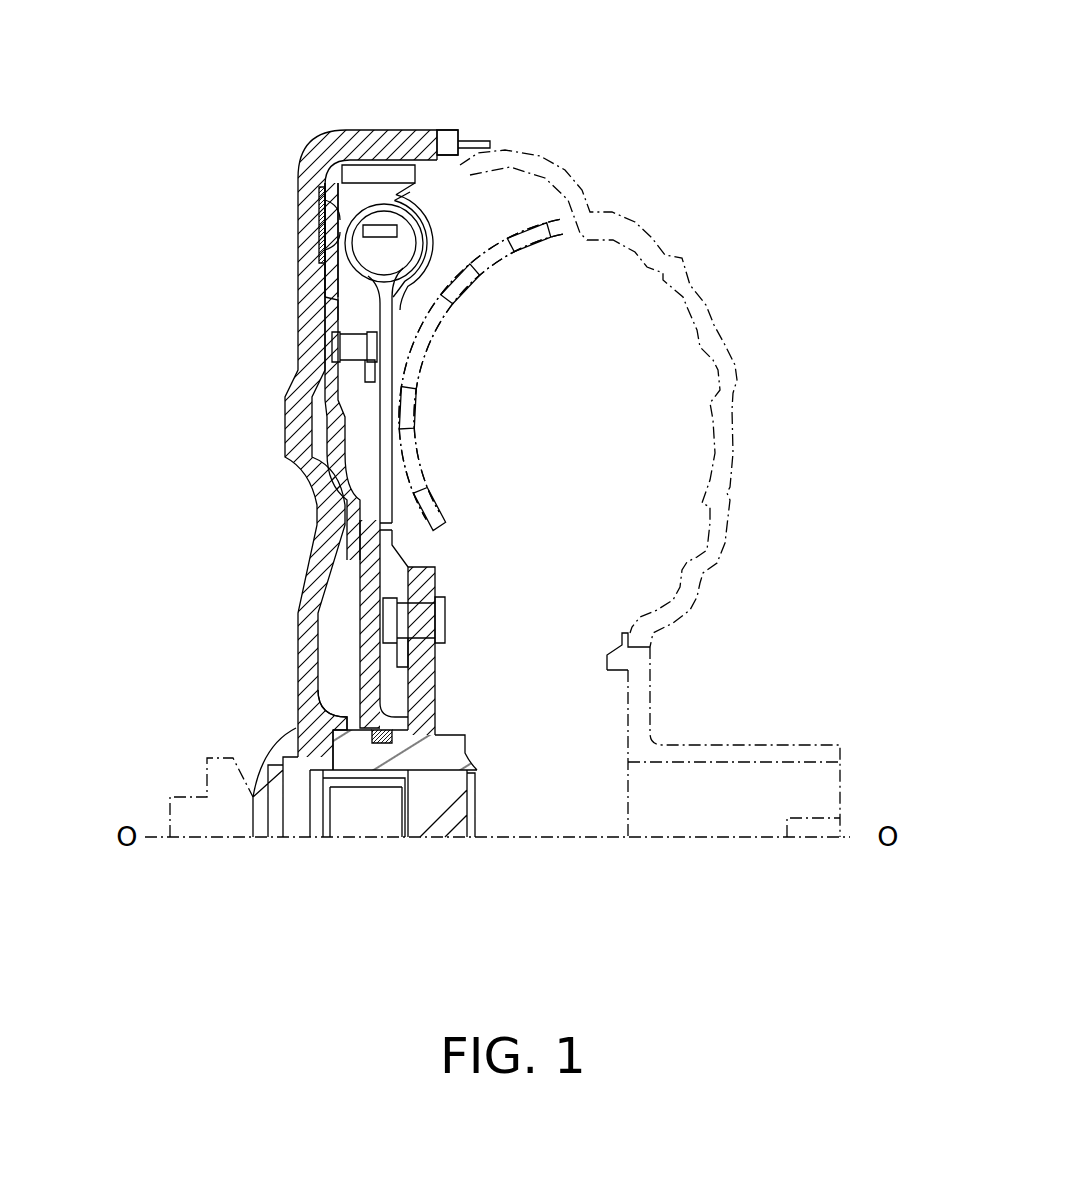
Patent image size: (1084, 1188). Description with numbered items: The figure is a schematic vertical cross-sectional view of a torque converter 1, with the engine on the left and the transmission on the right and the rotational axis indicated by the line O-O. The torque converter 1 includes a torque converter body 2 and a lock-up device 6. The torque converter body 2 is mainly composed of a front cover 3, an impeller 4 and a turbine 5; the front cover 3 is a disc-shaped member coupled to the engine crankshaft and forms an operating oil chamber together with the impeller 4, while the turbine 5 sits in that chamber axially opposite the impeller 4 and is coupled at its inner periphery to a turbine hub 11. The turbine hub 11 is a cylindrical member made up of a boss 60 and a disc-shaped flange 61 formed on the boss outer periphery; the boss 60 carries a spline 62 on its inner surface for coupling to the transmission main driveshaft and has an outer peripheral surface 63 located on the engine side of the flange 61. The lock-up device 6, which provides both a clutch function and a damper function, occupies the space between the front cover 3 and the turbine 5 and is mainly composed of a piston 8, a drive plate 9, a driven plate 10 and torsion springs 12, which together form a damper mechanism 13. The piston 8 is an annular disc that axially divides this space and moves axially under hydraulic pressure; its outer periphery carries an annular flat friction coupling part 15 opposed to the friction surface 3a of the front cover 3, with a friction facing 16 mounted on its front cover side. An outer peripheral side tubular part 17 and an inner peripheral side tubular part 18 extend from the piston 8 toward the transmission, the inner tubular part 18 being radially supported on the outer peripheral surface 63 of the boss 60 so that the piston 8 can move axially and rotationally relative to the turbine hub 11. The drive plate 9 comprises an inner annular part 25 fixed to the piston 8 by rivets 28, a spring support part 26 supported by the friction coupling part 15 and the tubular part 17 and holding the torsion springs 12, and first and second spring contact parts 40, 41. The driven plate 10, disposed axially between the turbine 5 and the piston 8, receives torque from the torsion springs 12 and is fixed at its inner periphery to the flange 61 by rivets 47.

The torque converter 1 is at (618, 90).
The torque converter body 2 is at (662, 210).
The front cover 3 is at (298, 397).
The friction surface 3a is at (322, 252).
The impeller 4 is at (732, 320).
The turbine 5 is at (556, 224).
The lock-up device 6 is at (440, 192).
The piston 8 is at (325, 448).
The drive plate 9 is at (420, 192).
The driven plate 10 is at (410, 345).
The turbine hub 11 is at (488, 762).
The torsion springs 12 is at (430, 228).
The damper mechanism 13 is at (434, 246).
The friction coupling part 15 is at (338, 212).
The friction facing 16 is at (300, 178).
The outer peripheral side tubular part 17 is at (386, 175).
The inner peripheral side tubular part 18 is at (388, 713).
The annular part 25 is at (333, 308).
The spring support part 26 is at (360, 186).
The rivets 28 is at (334, 347).
The first spring contact parts 40 is at (435, 262).
The second spring contact parts 41 is at (407, 322).
The rivets 47 is at (420, 617).
The boss 60 is at (456, 747).
The flange 61 is at (422, 654).
The spline 62 is at (366, 782).
The outer peripheral surface 63 is at (345, 724).